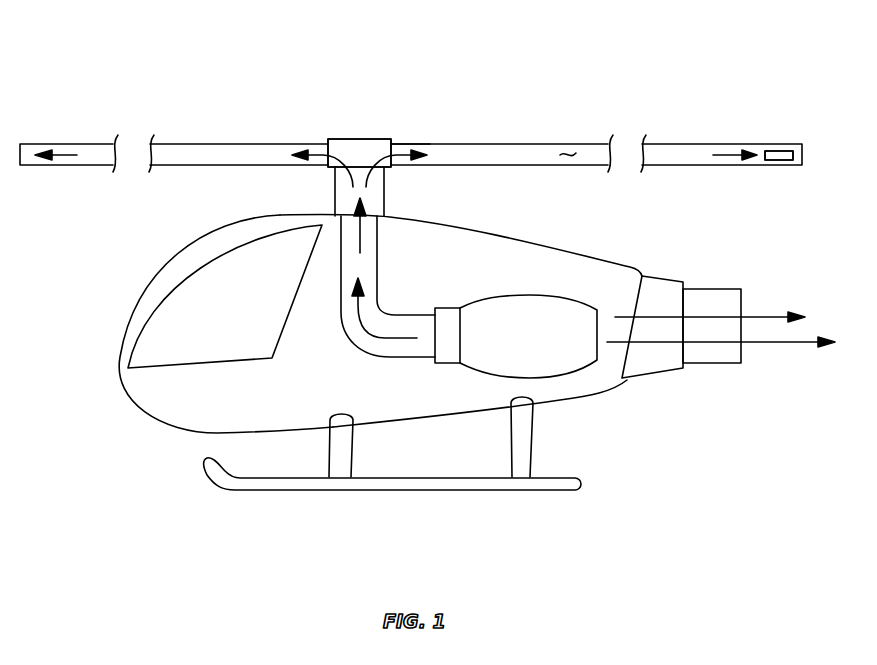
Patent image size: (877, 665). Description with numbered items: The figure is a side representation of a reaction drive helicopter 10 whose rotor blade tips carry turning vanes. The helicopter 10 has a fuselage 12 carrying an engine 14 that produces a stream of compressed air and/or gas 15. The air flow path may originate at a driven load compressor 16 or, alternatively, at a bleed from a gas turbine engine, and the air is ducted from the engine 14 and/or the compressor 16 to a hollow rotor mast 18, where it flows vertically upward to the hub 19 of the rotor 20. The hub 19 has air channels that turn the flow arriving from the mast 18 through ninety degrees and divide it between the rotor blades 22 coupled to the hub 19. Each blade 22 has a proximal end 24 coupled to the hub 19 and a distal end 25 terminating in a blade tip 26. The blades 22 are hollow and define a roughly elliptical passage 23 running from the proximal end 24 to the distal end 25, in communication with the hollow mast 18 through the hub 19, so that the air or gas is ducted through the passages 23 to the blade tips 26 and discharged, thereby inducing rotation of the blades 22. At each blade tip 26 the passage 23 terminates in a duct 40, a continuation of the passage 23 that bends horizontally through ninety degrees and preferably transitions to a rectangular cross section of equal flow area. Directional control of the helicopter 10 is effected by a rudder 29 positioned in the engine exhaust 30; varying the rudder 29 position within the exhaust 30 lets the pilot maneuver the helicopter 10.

The reaction drive helicopter 10 is at (172, 524).
The fuselage 12 is at (157, 390).
The engine 14 is at (560, 360).
The stream of compressed air and/or gas 15 is at (382, 340).
The driven load compressor 16 is at (448, 347).
The hollow rotor mast 18 is at (384, 192).
The hub 19 is at (370, 139).
The rotor 20 is at (328, 132).
The rotor blades 22 is at (500, 150).
The passage 23 is at (568, 155).
The proximal end 24 is at (396, 143).
The distal end 25 is at (755, 143).
The blade tip 26 is at (775, 143).
The rudder 29 is at (720, 289).
The engine exhaust 30 is at (767, 345).
The duct 40 is at (782, 160).